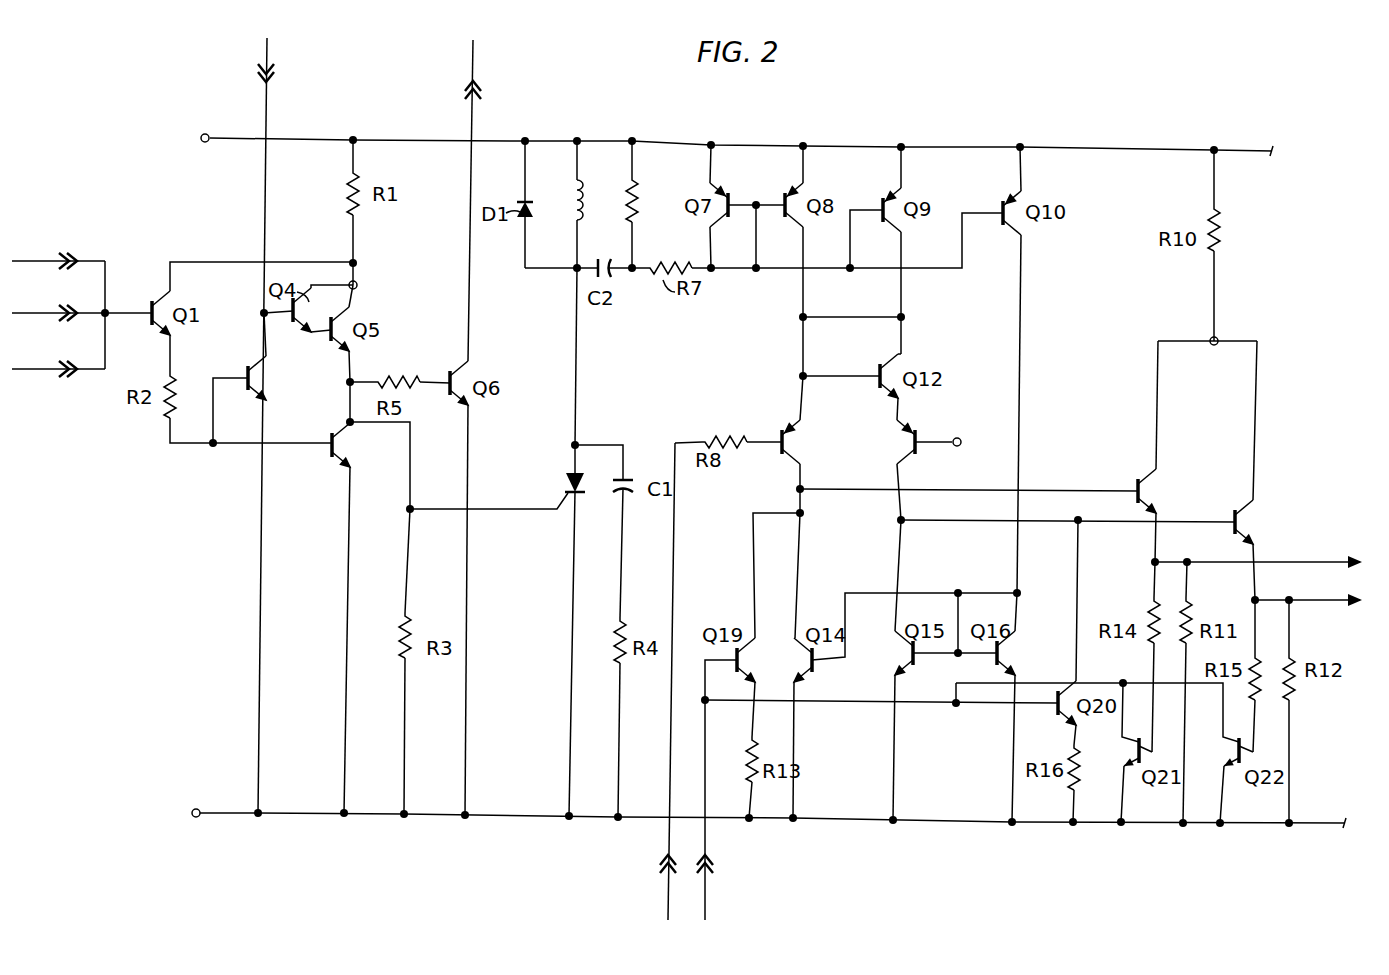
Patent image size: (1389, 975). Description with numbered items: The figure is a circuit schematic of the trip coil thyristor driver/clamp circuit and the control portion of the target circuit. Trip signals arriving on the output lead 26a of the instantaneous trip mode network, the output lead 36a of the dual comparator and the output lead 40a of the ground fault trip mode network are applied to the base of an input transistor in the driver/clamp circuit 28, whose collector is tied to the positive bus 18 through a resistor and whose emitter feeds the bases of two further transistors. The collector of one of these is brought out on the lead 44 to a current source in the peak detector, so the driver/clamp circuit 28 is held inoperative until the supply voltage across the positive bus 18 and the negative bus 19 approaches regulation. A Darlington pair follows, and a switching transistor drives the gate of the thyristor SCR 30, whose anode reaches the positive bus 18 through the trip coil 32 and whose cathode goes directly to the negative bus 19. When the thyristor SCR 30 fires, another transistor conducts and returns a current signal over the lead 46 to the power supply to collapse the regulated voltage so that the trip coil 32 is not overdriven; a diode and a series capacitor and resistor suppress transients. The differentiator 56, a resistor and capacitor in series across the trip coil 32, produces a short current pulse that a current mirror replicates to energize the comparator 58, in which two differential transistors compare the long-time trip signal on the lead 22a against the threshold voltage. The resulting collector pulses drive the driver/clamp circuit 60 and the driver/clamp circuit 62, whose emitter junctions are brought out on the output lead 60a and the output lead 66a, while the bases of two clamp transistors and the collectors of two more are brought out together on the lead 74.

The positive bus 18 is at (378, 139).
The negative bus 19 is at (318, 815).
The lead 44 is at (266, 42).
The lead 46 is at (476, 46).
The output lead of dual comparator 36a is at (15, 262).
The output lead of instantaneous trip mode network 26a is at (15, 314).
The output lead of ground fault trip mode network 40a is at (15, 370).
The driver/clamp circuit 28 is at (240, 468).
The trip coil 32 is at (572, 194).
The thyristor SCR 30 is at (570, 487).
The differentiator 56 is at (652, 170).
The comparator 58 is at (860, 453).
The driver/clamp circuit 60 is at (1126, 482).
The driver/clamp circuit 62 is at (1272, 506).
The output lead of driver/clamp circuit 60a is at (1310, 563).
The output lead of driver/clamp circuit 66a is at (1308, 604).
The lead 22a is at (667, 895).
The lead 74 is at (707, 895).